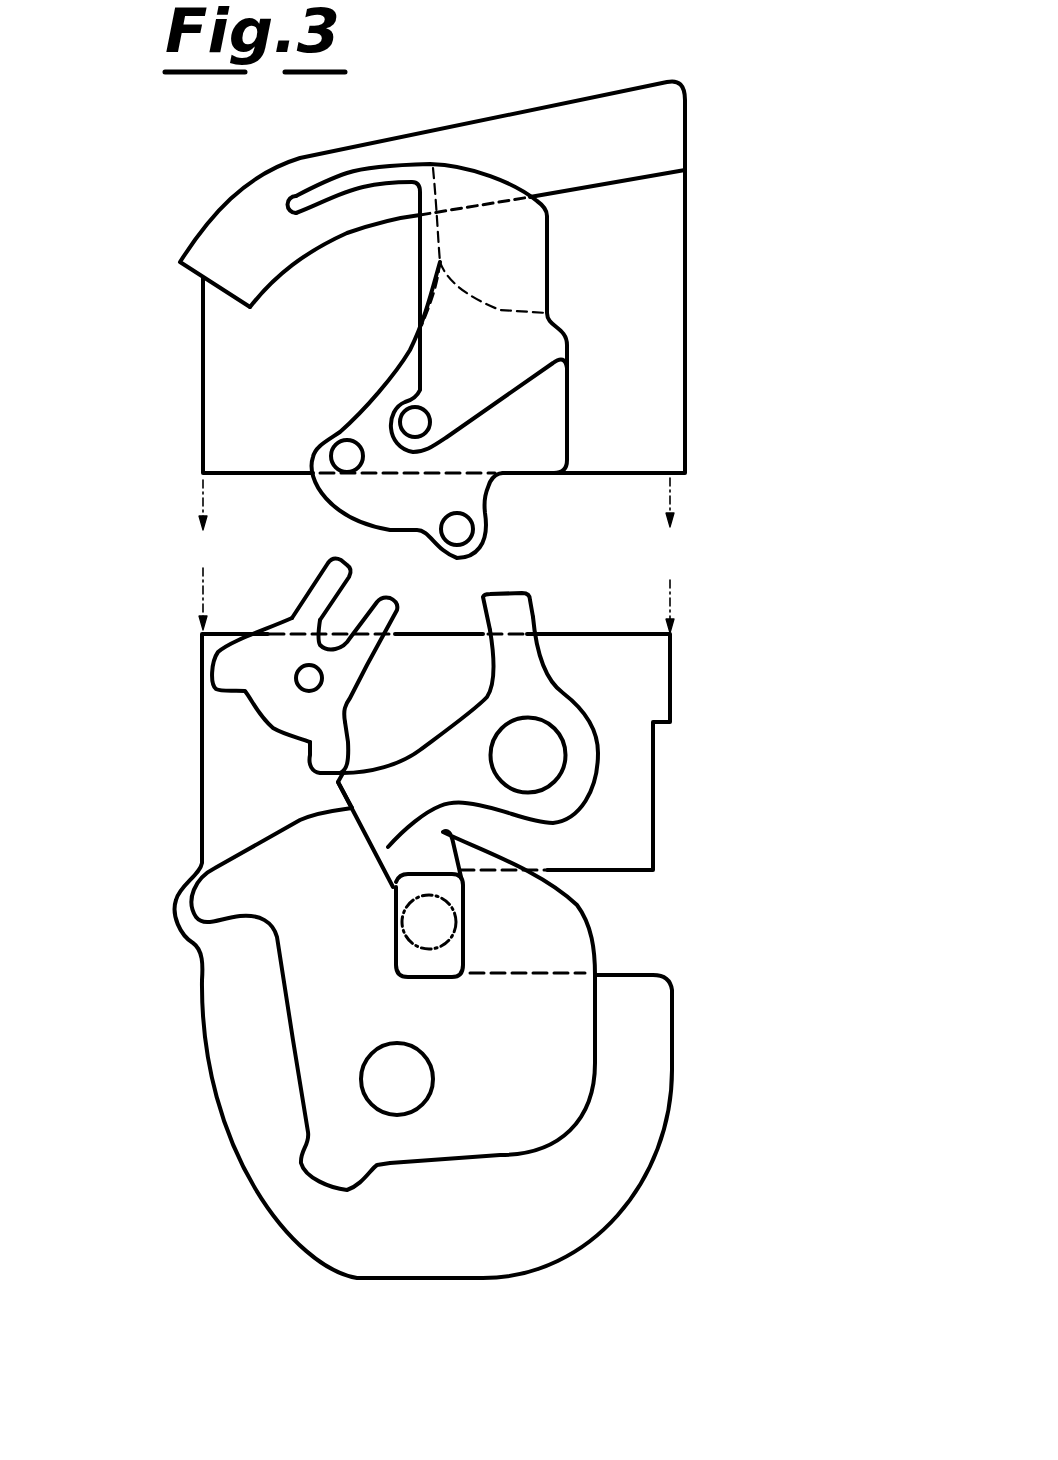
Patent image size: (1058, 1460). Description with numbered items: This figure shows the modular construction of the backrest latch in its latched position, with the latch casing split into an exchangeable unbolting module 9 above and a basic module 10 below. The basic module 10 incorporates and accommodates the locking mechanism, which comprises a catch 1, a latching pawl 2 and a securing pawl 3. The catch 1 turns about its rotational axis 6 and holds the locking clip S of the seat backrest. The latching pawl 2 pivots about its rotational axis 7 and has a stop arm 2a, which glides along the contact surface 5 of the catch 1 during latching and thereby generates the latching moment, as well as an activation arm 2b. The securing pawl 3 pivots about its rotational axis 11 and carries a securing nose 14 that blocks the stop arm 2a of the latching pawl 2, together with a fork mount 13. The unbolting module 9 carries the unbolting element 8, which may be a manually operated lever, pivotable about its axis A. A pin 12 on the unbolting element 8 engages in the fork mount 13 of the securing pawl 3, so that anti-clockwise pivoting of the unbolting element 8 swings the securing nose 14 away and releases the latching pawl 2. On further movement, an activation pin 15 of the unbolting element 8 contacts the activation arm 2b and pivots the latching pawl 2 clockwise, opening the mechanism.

The catch 1 is at (567, 1100).
The latching pawl 2 is at (584, 804).
The stop arm 2a is at (362, 790).
The activation arm 2b is at (520, 613).
The securing pawl 3 is at (205, 658).
The contact surface 5 is at (363, 827).
The rotational axis 6 is at (397, 1079).
The rotational axis 7 is at (528, 758).
The unbolting element 8 is at (543, 337).
The unbolting module 9 is at (687, 228).
The basic module 10 is at (308, 1252).
The rotational axis 11 is at (309, 678).
The pin 12 is at (347, 457).
The fork mount 13 is at (340, 610).
The securing nose 14 is at (317, 756).
The activation pin 15 is at (457, 530).
The rotational axis A is at (415, 422).
The locking clip S is at (443, 928).